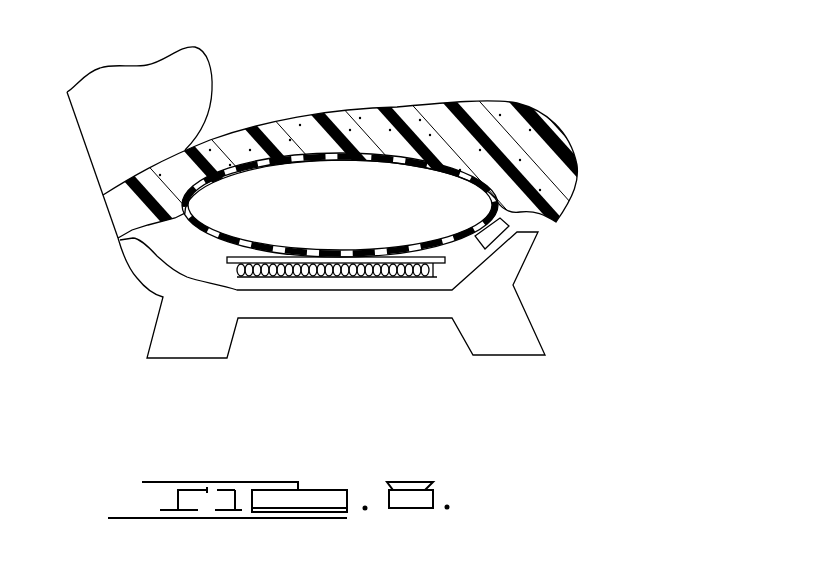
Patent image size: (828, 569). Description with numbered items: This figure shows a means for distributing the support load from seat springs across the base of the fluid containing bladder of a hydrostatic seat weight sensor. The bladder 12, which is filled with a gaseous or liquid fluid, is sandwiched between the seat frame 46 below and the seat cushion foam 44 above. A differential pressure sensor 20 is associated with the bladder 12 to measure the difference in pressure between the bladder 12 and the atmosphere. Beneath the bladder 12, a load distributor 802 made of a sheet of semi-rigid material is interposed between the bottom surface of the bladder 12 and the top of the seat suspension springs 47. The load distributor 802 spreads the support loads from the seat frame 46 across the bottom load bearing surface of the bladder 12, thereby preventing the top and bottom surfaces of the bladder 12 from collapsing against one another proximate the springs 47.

The bladder 12 is at (283, 152).
The seat cushion foam 44 is at (498, 108).
The differential pressure sensor 20 is at (503, 227).
The seat frame 46 is at (497, 280).
The seat suspension springs 47 is at (313, 280).
The load distributor 802 is at (428, 262).